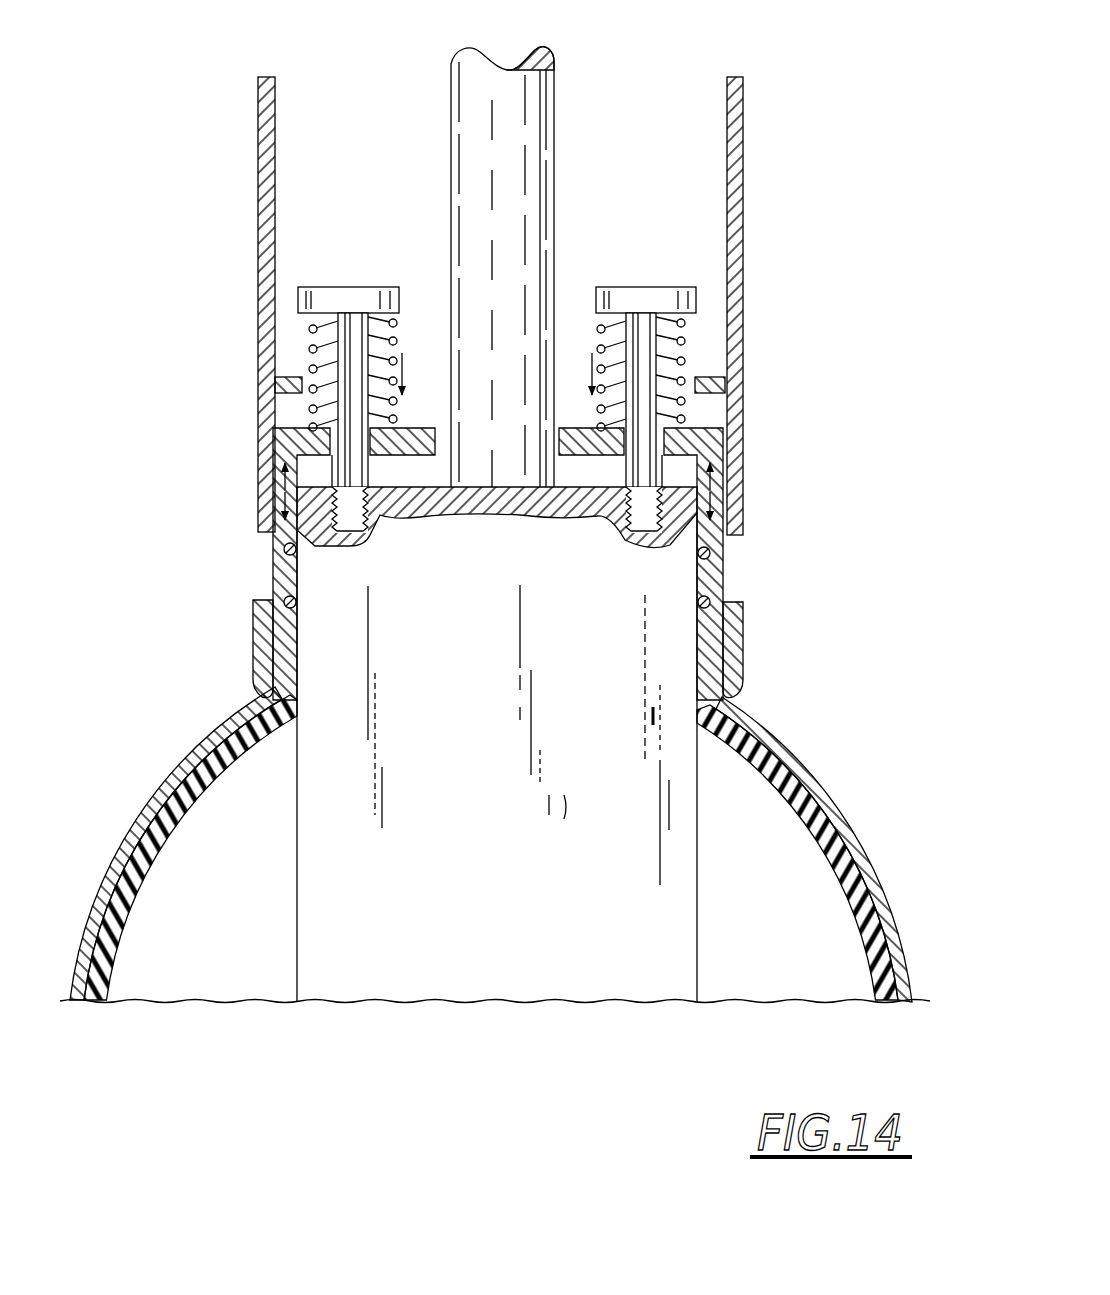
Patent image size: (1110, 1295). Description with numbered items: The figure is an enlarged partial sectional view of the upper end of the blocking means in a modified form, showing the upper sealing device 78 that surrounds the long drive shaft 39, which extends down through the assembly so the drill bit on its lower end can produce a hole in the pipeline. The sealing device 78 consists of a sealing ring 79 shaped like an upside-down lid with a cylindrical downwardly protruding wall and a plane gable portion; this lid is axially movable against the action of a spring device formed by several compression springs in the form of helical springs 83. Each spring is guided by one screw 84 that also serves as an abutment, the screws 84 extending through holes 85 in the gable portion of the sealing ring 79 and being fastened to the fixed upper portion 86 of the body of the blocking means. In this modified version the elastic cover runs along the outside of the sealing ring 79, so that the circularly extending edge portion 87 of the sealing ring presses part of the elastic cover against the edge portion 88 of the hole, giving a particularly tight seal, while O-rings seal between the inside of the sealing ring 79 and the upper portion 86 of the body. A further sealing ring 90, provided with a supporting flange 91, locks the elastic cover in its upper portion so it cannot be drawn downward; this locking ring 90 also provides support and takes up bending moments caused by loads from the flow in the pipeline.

The drive shaft 39 is at (545, 180).
The upper sealing device 78 is at (245, 548).
The sealing ring 79 is at (715, 563).
The helical springs 83 is at (313, 347).
The screws 84 is at (340, 313).
The holes 85 is at (333, 460).
The upper portion of the body 86 is at (640, 577).
The edge portion of the sealing ring 87 is at (722, 690).
The edge portion of the hole 88 is at (268, 692).
The sealing ring (locking ring) 90 is at (262, 363).
The supporting flange 91 is at (283, 396).